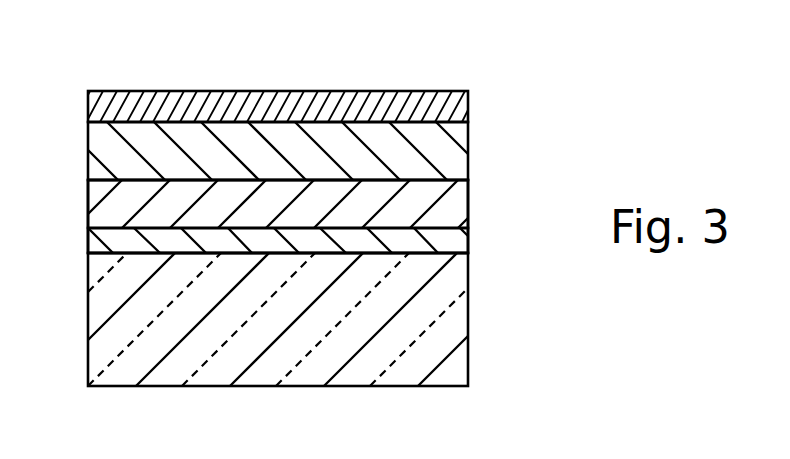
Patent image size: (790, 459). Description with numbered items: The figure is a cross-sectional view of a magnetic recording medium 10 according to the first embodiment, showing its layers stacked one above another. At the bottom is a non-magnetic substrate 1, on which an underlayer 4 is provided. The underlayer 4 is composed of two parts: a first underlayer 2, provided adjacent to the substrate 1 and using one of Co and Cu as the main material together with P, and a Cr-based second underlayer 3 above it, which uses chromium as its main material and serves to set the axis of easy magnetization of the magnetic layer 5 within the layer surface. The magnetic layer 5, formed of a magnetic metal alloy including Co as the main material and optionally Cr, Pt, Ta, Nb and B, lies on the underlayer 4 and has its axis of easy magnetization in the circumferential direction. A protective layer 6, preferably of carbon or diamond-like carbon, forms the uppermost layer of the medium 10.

The magnetic recording medium 10 is at (92, 62).
The non-magnetic substrate 1 is at (458, 315).
The first underlayer 2 is at (460, 237).
The second underlayer 3 is at (460, 187).
The underlayer 4 is at (502, 180).
The magnetic layer 5 is at (458, 145).
The protective layer 6 is at (460, 100).